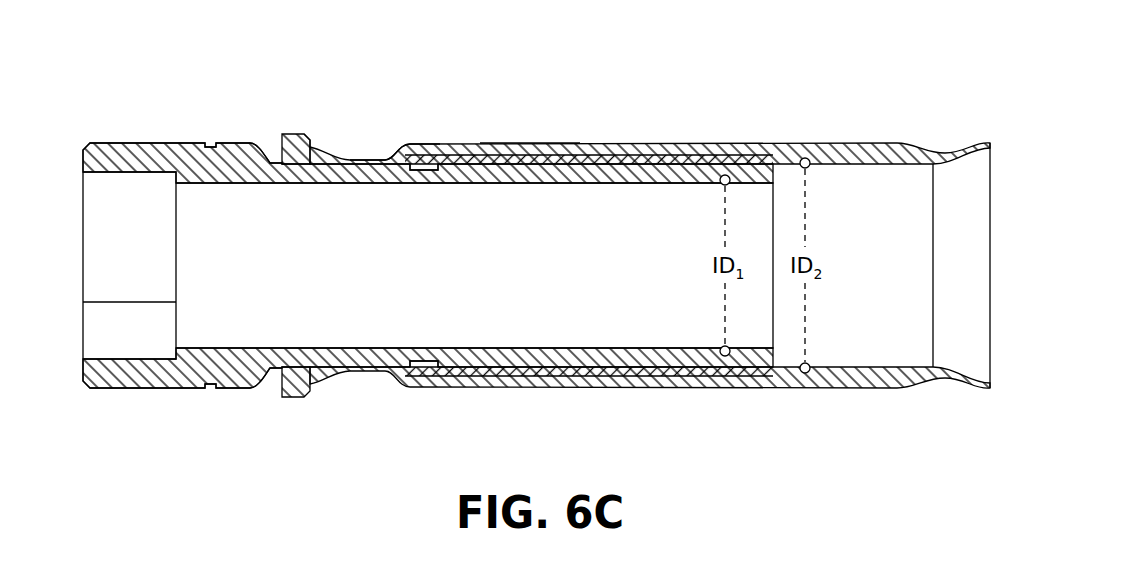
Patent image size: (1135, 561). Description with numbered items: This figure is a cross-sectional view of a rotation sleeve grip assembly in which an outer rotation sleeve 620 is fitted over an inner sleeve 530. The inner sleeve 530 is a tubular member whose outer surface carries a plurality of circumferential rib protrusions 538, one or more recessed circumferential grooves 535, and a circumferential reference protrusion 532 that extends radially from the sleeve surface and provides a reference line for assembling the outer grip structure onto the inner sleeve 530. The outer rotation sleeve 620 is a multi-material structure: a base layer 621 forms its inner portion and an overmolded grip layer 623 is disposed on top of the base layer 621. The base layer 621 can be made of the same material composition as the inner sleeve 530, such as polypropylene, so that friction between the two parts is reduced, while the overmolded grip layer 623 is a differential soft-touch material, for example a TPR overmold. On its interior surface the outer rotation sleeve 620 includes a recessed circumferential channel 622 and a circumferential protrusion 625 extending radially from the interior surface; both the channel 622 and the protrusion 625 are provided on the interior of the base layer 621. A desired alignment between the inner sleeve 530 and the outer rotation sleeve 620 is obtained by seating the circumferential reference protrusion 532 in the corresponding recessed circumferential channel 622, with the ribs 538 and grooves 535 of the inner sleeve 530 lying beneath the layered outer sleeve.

The inner sleeve 530 is at (243, 143).
The circumferential reference protrusion 532 is at (282, 148).
The recessed circumferential groove 535 is at (422, 168).
The circumferential rib protrusion 538 is at (337, 150).
The outer rotation sleeve 620 is at (282, 413).
The base layer 621 is at (385, 152).
The recessed circumferential channel 622 is at (309, 144).
The overmolded grip layer 623 is at (528, 143).
The circumferential protrusion 625 is at (437, 145).